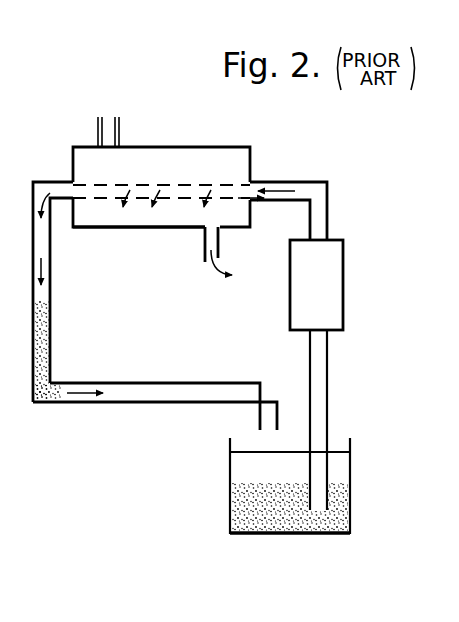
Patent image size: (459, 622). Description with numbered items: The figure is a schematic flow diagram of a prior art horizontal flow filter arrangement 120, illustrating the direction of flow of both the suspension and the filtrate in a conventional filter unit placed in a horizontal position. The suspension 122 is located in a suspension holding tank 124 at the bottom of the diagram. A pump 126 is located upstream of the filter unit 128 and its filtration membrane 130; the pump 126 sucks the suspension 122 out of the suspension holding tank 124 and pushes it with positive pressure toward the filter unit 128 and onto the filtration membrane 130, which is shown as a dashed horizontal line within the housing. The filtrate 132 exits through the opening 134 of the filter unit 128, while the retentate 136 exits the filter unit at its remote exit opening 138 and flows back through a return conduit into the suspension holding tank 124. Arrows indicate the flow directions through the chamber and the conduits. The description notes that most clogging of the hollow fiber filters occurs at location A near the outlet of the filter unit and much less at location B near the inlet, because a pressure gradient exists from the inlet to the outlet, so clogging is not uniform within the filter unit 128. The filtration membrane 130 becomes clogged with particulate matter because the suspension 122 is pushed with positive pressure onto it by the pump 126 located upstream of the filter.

The horizontal flow filter arrangement 120 is at (336, 189).
The suspension 122 is at (285, 517).
The suspension holding tank 124 is at (230, 488).
The pump 126 is at (343, 268).
The filter unit 128 is at (150, 147).
The filtration membrane 130 is at (172, 183).
The filtrate 132 is at (203, 255).
The opening 134 is at (202, 243).
The retentate 136 is at (43, 348).
The remote exit opening 138 is at (72, 188).